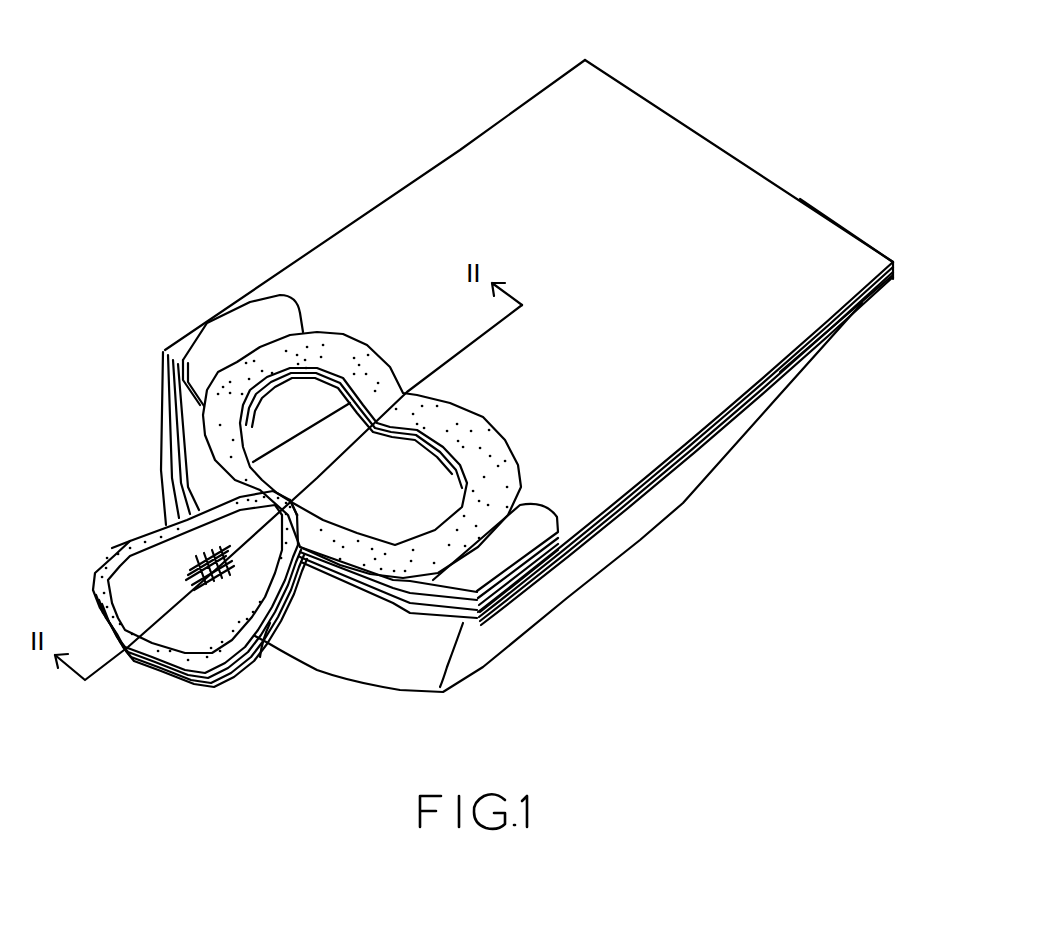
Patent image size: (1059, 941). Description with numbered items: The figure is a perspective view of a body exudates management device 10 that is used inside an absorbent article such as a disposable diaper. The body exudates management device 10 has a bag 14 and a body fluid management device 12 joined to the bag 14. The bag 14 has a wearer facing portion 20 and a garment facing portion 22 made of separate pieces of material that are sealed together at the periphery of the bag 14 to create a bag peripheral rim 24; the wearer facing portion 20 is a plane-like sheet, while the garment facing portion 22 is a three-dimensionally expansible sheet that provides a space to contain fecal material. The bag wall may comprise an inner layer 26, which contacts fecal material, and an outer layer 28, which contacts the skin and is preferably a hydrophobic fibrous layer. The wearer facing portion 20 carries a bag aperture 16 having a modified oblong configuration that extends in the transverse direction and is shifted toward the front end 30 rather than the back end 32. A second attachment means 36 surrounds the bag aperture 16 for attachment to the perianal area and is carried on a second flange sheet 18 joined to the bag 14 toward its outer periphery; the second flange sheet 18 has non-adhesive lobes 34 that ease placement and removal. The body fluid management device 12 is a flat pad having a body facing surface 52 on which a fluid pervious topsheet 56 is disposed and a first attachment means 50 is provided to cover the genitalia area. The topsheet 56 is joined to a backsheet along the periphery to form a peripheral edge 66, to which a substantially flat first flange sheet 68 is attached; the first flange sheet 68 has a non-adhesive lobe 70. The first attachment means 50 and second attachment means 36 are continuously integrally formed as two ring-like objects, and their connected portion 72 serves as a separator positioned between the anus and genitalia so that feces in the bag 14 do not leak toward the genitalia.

The body exudates management device 10 is at (296, 225).
The body fluid management device 12 is at (130, 530).
The bag 14 is at (350, 697).
The bag aperture 16 is at (420, 467).
The second flange sheet 18 is at (383, 440).
The wearer facing portion 20 is at (611, 168).
The garment facing portion 22 is at (583, 608).
The bag peripheral rim 24 is at (733, 167).
The inner layer 26 is at (497, 612).
The outer layer 28 is at (580, 467).
The front end 30 is at (163, 397).
The back end 32 is at (820, 210).
The lobes 34 is at (248, 310).
The second attachment means 36 is at (480, 440).
The first attachment means 50 is at (110, 562).
The body facing surface 52 is at (163, 560).
The fluid pervious topsheet 56 is at (135, 573).
The peripheral edge 66 is at (262, 630).
The first flange sheet 68 is at (183, 677).
The lobe 70 is at (125, 663).
The connected portion 72 is at (268, 497).